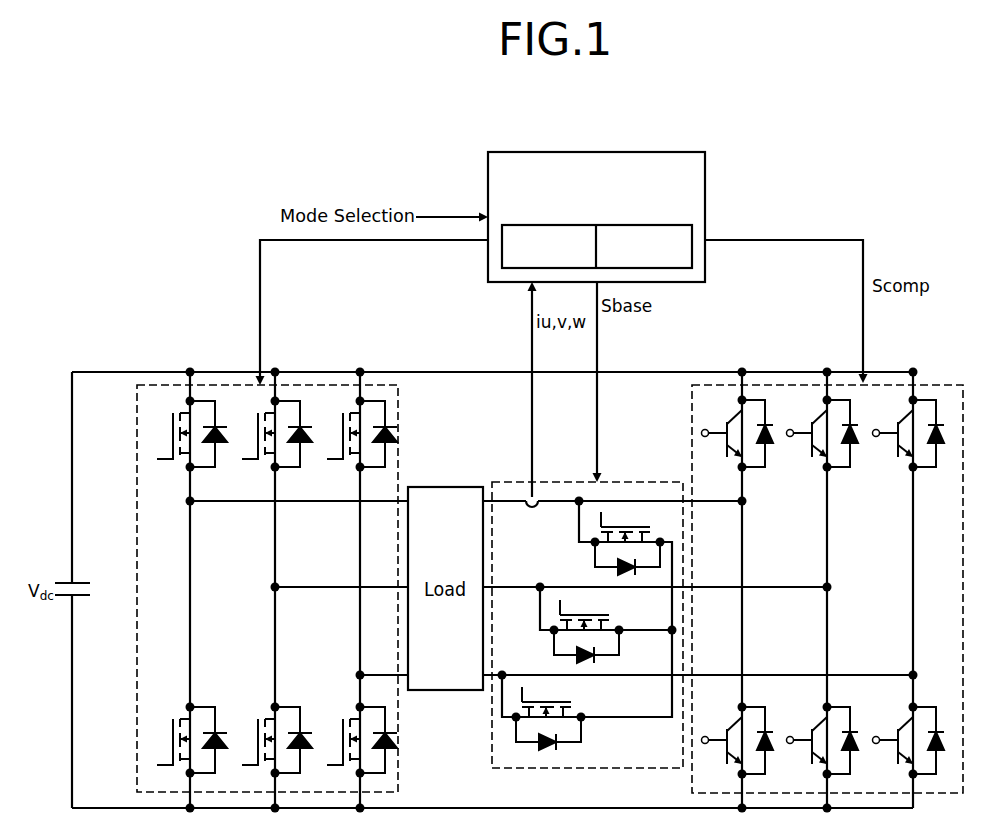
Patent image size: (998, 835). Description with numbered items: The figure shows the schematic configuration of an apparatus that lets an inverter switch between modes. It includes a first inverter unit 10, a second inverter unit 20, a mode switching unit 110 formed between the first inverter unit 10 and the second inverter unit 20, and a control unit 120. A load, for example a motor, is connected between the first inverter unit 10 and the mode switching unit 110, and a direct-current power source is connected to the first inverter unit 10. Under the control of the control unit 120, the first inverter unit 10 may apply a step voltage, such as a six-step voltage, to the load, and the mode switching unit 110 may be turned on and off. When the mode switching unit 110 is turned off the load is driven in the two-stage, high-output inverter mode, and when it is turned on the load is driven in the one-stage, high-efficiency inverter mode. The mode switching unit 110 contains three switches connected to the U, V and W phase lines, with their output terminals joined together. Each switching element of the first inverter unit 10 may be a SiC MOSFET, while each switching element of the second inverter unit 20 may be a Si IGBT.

The first inverter unit 10 is at (390, 384).
The second inverter unit 20 is at (955, 383).
The mode switching unit 110 is at (640, 480).
The control unit 120 is at (707, 191).